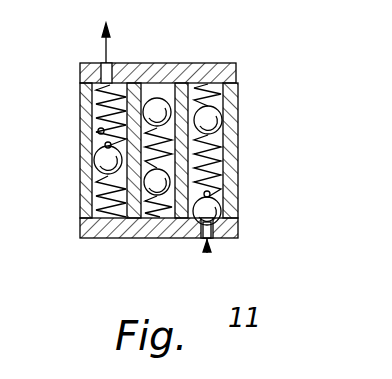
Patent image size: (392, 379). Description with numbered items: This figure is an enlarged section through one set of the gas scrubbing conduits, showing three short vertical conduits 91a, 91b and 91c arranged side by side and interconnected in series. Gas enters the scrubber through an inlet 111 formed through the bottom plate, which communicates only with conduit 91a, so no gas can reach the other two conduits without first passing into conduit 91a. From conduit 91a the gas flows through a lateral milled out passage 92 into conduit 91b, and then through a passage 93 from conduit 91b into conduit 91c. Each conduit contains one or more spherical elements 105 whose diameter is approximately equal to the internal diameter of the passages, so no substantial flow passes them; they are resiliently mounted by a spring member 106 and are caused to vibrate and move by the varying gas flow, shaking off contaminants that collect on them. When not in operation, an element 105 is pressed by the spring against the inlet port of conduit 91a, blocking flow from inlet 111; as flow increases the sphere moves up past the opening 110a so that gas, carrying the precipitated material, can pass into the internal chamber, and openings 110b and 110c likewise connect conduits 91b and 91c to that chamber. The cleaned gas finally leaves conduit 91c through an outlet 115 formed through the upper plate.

The conduit 91a is at (236, 85).
The conduit 91b is at (185, 83).
The conduit 91c is at (82, 107).
The lateral milled out passage 92 is at (190, 62).
The passage 93 is at (132, 222).
The element 105 is at (146, 106).
The spring member 106 is at (100, 92).
The opening 110a is at (212, 191).
The opening 110b is at (100, 132).
The opening 110c is at (107, 145).
The inlet 111 is at (212, 240).
The outlet 115 is at (100, 62).